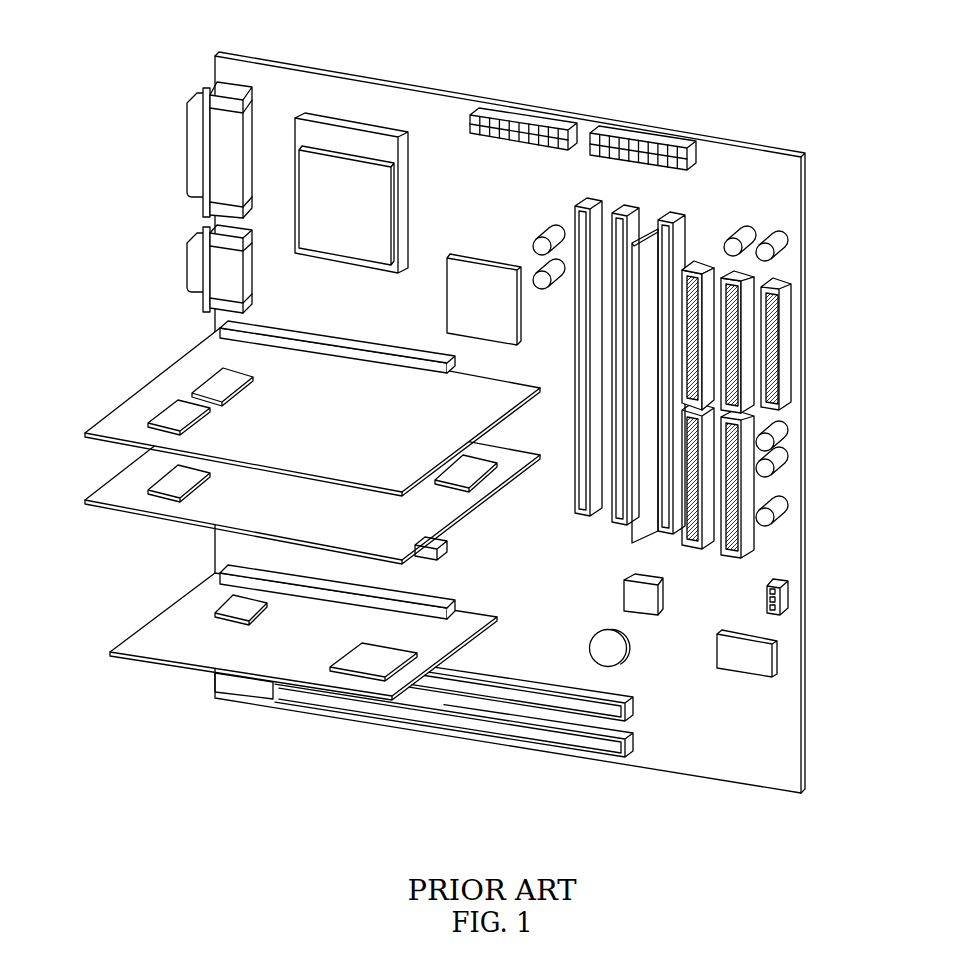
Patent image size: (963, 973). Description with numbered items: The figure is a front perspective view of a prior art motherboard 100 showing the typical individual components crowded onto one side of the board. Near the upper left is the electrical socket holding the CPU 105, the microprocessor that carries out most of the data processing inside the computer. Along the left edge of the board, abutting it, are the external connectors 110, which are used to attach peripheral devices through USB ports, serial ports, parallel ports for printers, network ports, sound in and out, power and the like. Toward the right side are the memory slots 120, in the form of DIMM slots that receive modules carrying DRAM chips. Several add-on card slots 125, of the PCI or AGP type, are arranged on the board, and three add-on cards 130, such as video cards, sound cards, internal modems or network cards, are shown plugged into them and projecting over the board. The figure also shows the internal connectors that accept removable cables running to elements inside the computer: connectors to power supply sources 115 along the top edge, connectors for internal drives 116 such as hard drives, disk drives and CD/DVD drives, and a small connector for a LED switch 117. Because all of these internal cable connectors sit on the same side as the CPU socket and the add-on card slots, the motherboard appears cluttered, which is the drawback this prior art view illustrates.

The motherboard 100 is at (752, 163).
The CPU 105 is at (368, 133).
The external connectors 110 is at (187, 117).
The power supply source connector 115 is at (538, 120).
The internal drive connector 116 is at (785, 336).
The LED switch connector 117 is at (782, 591).
The memory slots 120 is at (665, 223).
The add-on card slots 125 is at (232, 330).
The add-on cards 130 is at (200, 452).